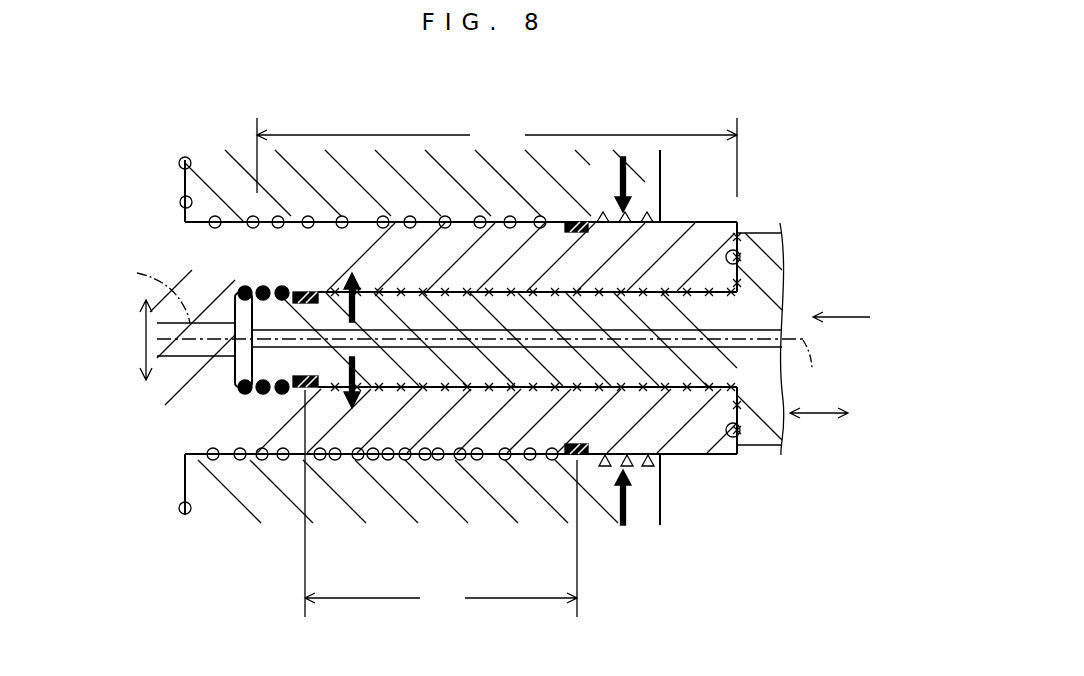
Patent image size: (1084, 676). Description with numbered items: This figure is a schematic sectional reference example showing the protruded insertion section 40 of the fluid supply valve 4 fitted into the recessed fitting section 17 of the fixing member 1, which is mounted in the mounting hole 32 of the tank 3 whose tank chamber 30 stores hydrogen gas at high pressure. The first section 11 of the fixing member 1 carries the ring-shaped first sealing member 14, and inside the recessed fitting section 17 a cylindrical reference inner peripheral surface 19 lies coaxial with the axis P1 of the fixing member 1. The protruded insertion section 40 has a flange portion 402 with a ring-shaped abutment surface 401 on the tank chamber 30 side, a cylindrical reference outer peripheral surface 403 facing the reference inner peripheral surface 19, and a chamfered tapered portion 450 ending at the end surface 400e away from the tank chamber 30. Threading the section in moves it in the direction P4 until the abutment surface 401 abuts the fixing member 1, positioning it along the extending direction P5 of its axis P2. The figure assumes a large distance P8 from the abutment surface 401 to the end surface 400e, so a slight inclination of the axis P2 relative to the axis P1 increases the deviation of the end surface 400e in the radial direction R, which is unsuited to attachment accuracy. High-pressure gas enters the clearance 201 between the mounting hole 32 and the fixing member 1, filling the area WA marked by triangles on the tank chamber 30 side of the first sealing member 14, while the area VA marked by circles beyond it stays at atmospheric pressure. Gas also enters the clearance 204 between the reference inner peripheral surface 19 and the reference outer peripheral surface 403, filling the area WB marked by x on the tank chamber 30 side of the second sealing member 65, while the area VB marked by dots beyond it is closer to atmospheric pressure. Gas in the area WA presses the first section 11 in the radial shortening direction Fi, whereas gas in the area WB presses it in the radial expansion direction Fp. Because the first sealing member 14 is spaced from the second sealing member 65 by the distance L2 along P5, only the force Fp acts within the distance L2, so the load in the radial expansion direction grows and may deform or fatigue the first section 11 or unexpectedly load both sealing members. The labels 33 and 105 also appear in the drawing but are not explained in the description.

The fixing member 1 is at (501, 351).
The first section 11 is at (722, 222).
The clearance 201 is at (294, 220).
The tank 3 is at (433, 206).
The mounting hole 32 is at (388, 343).
The weld bead 33 is at (462, 220).
The first sealing member 14 is at (578, 221).
The fluid supply valve 4 is at (850, 172).
The upper joint line 105 is at (381, 292).
The reference outer peripheral surface 403 is at (487, 240).
The reference inner peripheral surface 19 is at (364, 291).
The clearance 204 is at (490, 288).
The recessed fitting section 17 is at (527, 300).
The abutment surface 401 is at (762, 234).
The flange portion 402 is at (774, 258).
The protruded insertion section 40 is at (778, 285).
The tank chamber 30 is at (531, 282).
The end surface 400e is at (237, 359).
The tapered portion 450 is at (267, 288).
The second sealing member 65 is at (307, 291).
The area at atmospheric pressure VA is at (358, 219).
The area closer to atmospheric pressure VB is at (241, 289).
The high-pressure area in clearance 201 WA is at (614, 228).
The high-pressure area in clearance 204 WB is at (522, 297).
The radial shortening direction Fi is at (627, 200).
The radial expansion direction Fp is at (356, 306).
The radial direction R is at (138, 340).
The axis of the fixing member P1 is at (147, 291).
The axis of the protruded insertion section P2 is at (814, 368).
The direction away from the tank chamber P4 is at (840, 317).
The extending direction P5 is at (820, 415).
The distance from abutment surface to end surface P8 is at (497, 157).
The distance between sealing members L2 is at (441, 503).